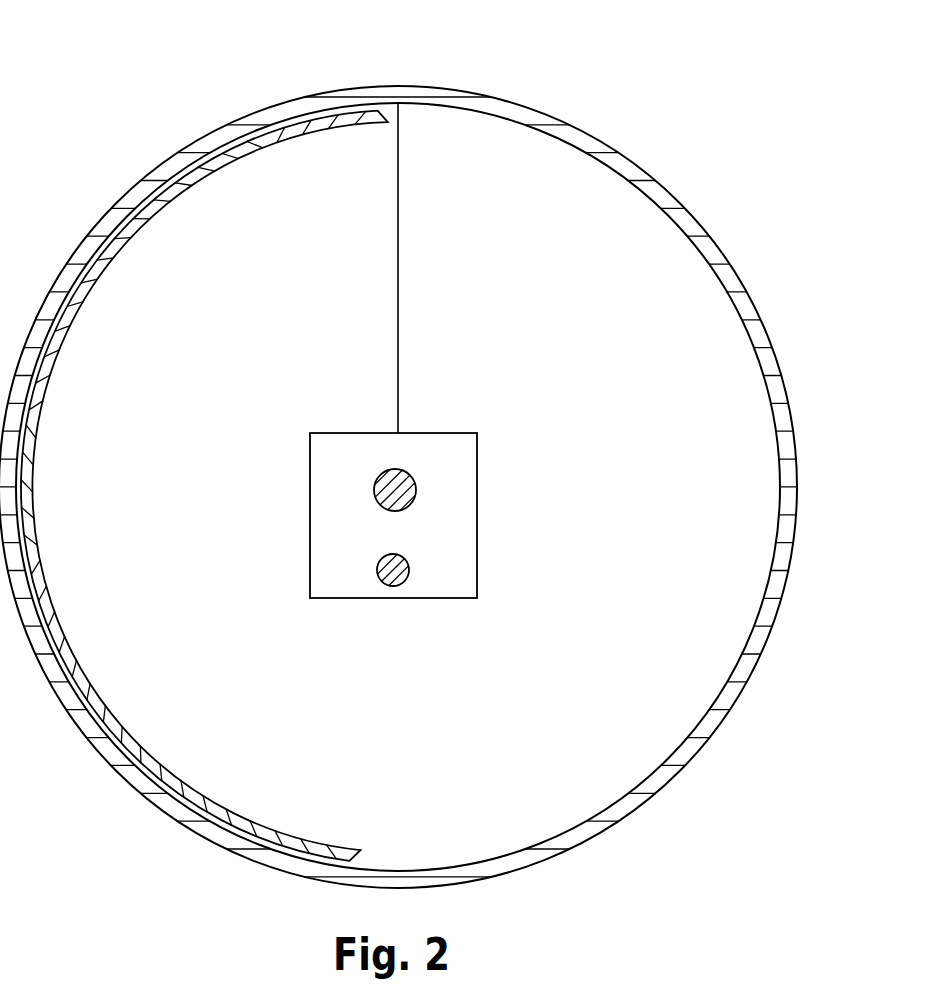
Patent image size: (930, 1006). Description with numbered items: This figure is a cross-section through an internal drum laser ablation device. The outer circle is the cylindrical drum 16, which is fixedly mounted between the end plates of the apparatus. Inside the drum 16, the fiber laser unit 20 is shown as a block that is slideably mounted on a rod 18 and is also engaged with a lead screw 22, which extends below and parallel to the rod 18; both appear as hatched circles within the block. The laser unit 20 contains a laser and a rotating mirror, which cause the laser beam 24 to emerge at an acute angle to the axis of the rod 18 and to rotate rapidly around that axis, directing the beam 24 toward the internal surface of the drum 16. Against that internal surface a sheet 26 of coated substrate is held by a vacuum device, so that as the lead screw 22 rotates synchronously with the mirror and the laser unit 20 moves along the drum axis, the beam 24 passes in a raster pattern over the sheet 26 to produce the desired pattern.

The cylindrical drum 16 is at (230, 132).
The rod 18 is at (405, 468).
The fiber laser unit 20 is at (353, 453).
The lead screw 22 is at (398, 568).
The laser beam 24 is at (400, 352).
The sheet of coated substrate 26 is at (162, 180).